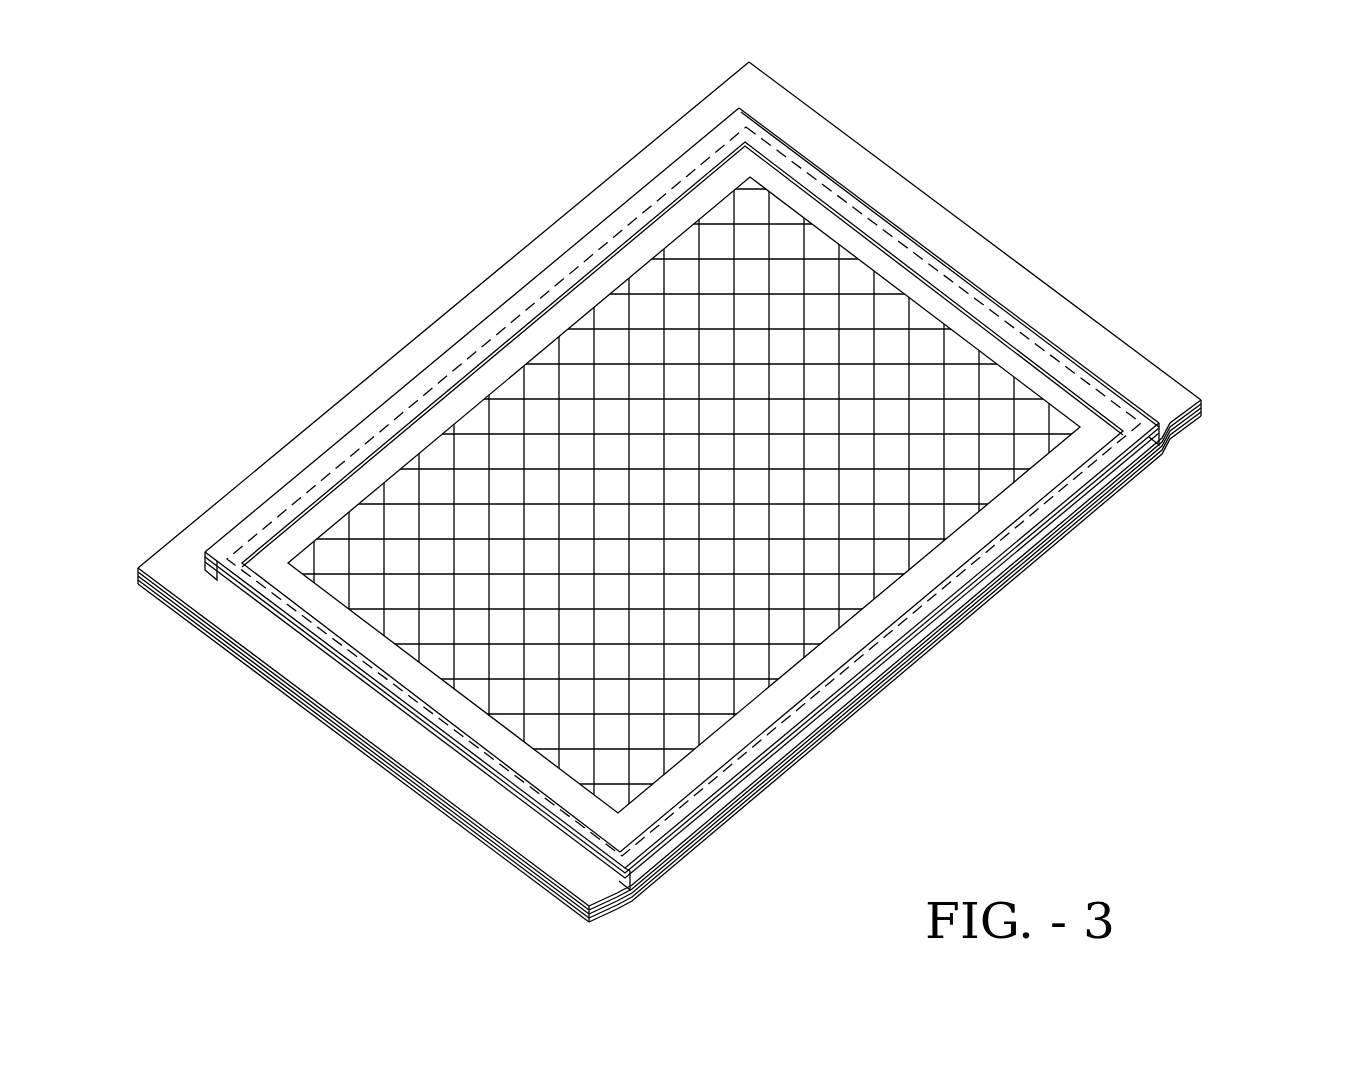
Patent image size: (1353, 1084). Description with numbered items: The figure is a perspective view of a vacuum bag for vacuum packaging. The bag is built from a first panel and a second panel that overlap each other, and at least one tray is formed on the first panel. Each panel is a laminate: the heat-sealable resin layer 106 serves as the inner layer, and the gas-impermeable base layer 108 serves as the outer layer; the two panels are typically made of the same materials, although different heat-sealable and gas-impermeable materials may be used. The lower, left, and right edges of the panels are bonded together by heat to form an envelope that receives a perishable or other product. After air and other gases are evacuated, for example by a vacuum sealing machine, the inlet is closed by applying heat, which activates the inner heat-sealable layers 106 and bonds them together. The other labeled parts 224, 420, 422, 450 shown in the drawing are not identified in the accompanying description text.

The heat-sealable resin layer 106 is at (478, 837).
The gas-impermeable base layer 108 is at (443, 805).
The conductive mesh 224 is at (1045, 478).
The frame 420 is at (815, 690).
The gasket 422 is at (748, 788).
The assembly 450 is at (1043, 675).